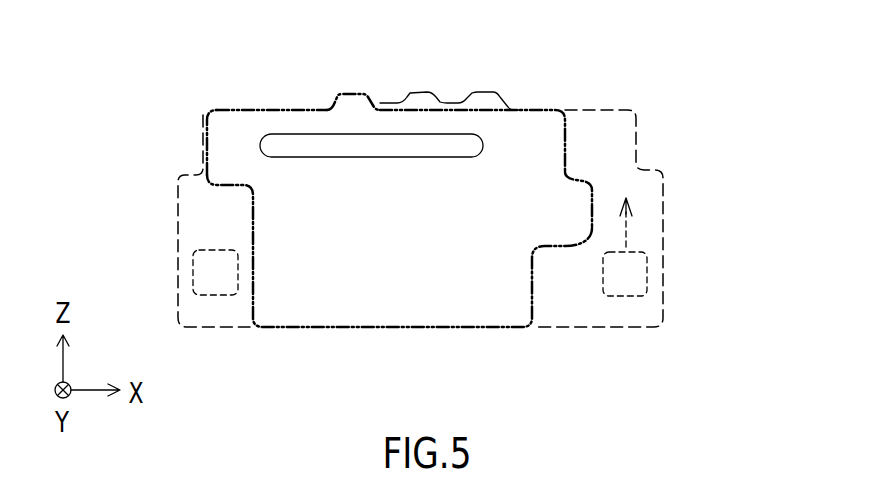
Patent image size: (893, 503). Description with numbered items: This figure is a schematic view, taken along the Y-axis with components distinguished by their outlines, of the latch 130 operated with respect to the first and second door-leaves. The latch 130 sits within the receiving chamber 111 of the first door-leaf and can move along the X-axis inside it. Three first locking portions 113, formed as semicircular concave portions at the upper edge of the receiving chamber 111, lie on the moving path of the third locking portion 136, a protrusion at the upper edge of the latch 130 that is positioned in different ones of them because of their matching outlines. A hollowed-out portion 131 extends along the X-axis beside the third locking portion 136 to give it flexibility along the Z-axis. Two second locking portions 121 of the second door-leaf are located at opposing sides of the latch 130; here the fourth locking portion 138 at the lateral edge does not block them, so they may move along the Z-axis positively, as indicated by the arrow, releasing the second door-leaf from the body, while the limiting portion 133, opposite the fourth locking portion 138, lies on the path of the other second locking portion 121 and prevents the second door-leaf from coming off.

The receiving chamber 111 is at (663, 213).
The first locking portions 113 is at (494, 82).
The second locking portions 121 is at (213, 290).
The latch 130 is at (411, 287).
The hollowed-out portion 131 is at (388, 160).
The limiting portion 133 is at (220, 142).
The third locking portion 136 is at (347, 102).
The fourth locking portion 138 is at (573, 193).